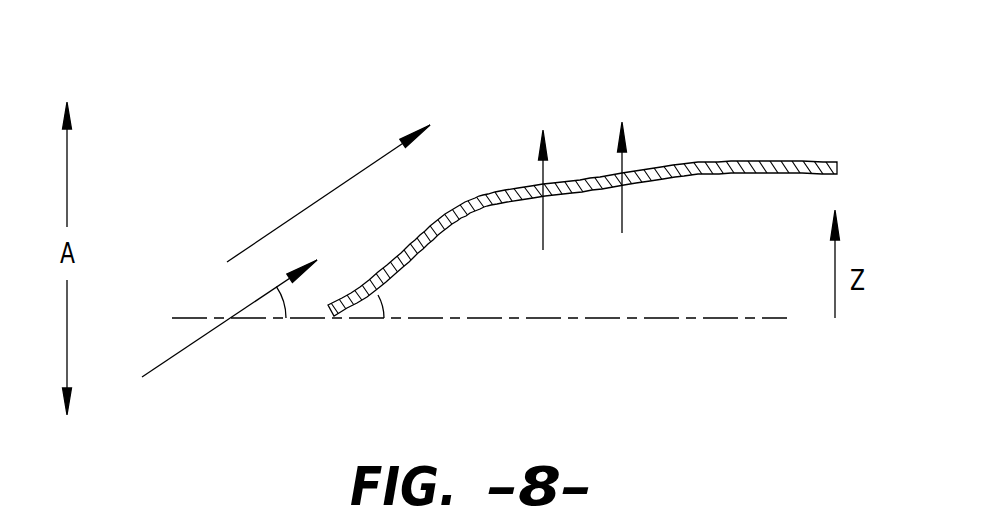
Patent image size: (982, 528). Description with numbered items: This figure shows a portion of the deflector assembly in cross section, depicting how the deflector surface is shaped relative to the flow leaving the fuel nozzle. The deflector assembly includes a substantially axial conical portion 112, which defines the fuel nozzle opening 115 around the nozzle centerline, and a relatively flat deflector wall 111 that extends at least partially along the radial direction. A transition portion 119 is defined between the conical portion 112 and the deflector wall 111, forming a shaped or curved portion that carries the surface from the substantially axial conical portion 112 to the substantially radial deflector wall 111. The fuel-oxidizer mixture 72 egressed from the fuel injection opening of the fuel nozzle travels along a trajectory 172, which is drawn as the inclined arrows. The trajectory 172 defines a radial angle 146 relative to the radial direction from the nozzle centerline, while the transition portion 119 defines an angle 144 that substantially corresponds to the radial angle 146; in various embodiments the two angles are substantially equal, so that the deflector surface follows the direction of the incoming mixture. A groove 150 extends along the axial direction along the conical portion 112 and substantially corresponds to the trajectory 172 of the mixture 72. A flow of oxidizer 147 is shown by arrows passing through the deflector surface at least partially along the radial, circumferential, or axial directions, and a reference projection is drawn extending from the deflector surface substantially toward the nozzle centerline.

The fuel-oxidizer mixture 72 is at (163, 358).
The deflector wall 111 is at (757, 161).
The conical portion 112 is at (317, 304).
The fuel nozzle opening 115 is at (237, 175).
The transition portion 119 is at (453, 150).
The angle 144 is at (384, 307).
The radial angle 146 is at (287, 314).
The flow of oxidizer 147 is at (624, 213).
The groove 150 is at (367, 266).
The trajectory 172 is at (190, 346).